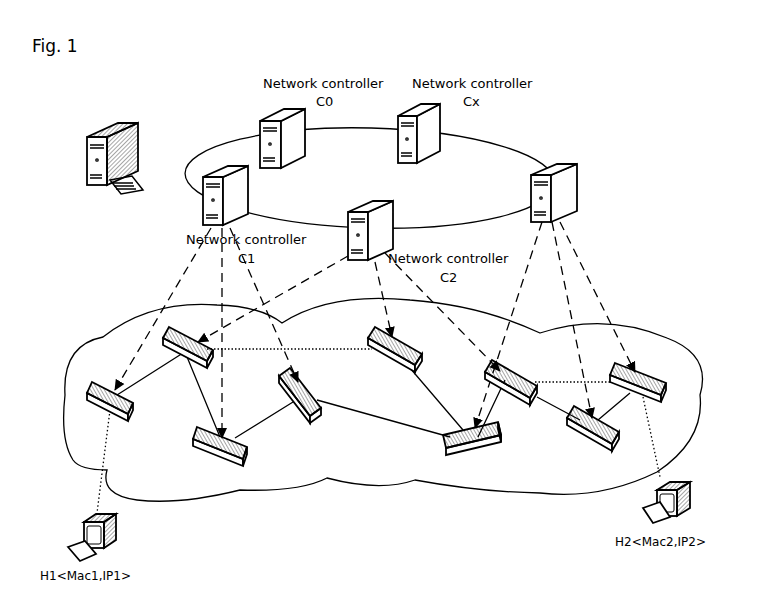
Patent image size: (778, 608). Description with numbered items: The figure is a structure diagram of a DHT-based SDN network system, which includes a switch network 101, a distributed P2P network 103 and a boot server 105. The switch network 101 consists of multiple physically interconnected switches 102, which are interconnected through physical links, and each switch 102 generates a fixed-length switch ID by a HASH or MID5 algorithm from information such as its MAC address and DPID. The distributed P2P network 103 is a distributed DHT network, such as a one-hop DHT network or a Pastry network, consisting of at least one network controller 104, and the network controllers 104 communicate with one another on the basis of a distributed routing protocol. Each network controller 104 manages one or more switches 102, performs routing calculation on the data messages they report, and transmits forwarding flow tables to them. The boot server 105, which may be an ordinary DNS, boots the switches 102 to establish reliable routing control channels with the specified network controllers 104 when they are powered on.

The switch network 101 is at (695, 415).
The switch 102 is at (648, 373).
The distributed P2P network 103 is at (538, 160).
The network controller 104 is at (578, 182).
The boot server 105 is at (138, 145).